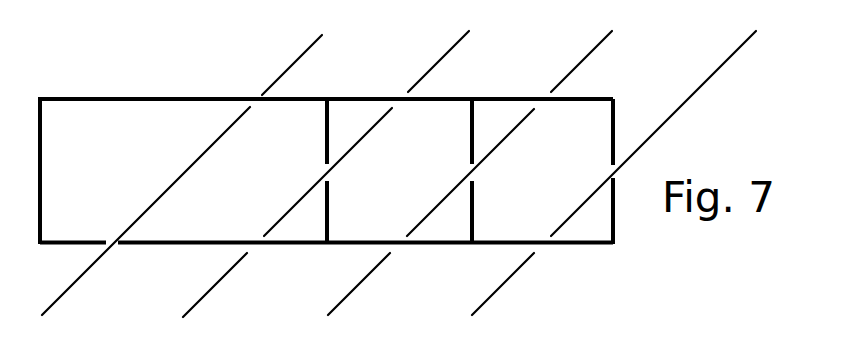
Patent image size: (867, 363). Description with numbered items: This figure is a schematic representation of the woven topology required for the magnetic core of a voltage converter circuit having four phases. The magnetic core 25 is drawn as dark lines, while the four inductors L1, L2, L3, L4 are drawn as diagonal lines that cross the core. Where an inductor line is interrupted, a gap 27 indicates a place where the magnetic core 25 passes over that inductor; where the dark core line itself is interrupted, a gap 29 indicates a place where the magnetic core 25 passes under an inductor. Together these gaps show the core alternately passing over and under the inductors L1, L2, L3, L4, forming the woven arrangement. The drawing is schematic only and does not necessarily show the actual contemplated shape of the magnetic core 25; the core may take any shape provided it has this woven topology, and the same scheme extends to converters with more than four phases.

The magnetic core 25 is at (172, 98).
The gap 27 is at (256, 97).
The gap 29 is at (473, 179).
The inductor L1 is at (80, 280).
The inductor L2 is at (212, 289).
The inductor L3 is at (353, 288).
The inductor L4 is at (498, 289).